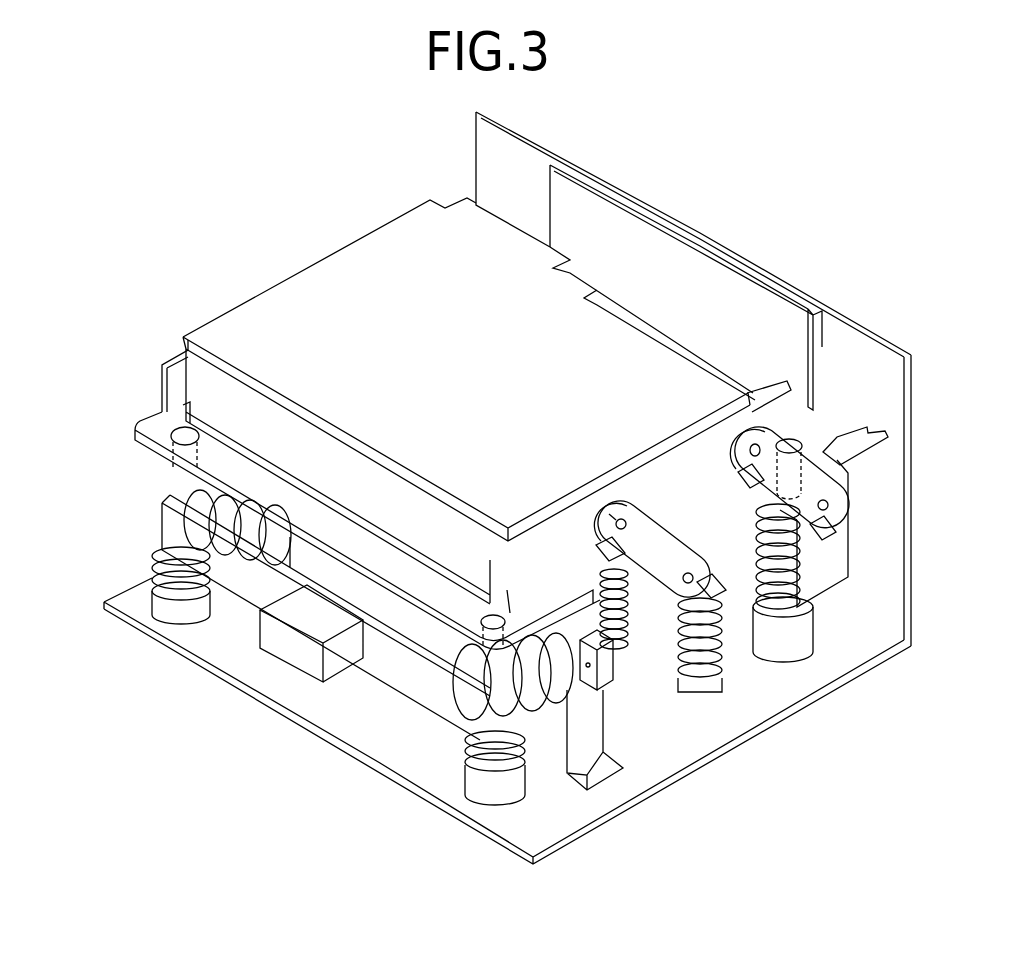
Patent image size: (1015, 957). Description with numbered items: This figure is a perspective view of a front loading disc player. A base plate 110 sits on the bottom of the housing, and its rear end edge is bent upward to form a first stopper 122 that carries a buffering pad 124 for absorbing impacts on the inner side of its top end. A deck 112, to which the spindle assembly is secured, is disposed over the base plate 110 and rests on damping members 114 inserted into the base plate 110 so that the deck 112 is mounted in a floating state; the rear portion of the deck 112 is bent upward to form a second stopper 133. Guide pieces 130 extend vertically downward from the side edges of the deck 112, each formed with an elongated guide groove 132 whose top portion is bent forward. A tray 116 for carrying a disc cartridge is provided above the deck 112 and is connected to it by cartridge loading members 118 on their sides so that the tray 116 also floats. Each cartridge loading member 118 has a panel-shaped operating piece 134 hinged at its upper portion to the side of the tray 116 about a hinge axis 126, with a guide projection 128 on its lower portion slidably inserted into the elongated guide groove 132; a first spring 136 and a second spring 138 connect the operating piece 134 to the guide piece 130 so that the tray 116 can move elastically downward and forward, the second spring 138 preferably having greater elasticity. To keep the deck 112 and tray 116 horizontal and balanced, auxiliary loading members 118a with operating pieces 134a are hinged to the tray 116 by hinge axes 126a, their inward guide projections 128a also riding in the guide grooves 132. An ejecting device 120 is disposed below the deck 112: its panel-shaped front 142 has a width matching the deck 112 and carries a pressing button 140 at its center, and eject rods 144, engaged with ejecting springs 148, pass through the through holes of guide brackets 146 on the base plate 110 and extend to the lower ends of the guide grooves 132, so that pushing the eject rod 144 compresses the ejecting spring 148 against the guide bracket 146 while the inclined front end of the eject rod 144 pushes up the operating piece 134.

The base plate 110 is at (748, 700).
The deck 112 is at (197, 479).
The damping members 114 is at (790, 653).
The tray 116 is at (326, 280).
The cartridge loading member 118 is at (593, 489).
The auxiliary loading member 118a is at (857, 407).
The ejecting device 120 is at (408, 702).
The first stopper 122 is at (873, 527).
The buffering pad 124 is at (780, 290).
The hinge axis 126 is at (583, 523).
The hinge axis 126a is at (750, 428).
The guide projection 128 is at (673, 672).
The guide projection 128a is at (905, 494).
The guide piece 130 is at (672, 660).
The elongated guide groove 132 is at (853, 560).
The second stopper 133 is at (708, 278).
The operating piece 134 is at (640, 530).
The operating piece 134a is at (813, 473).
The first spring 136 is at (597, 580).
The second spring 138 is at (726, 700).
The pressing button 140 is at (283, 643).
The front 142 is at (326, 654).
The eject rod 144 is at (522, 705).
The guide bracket 146 is at (587, 733).
The ejecting spring 148 is at (507, 707).